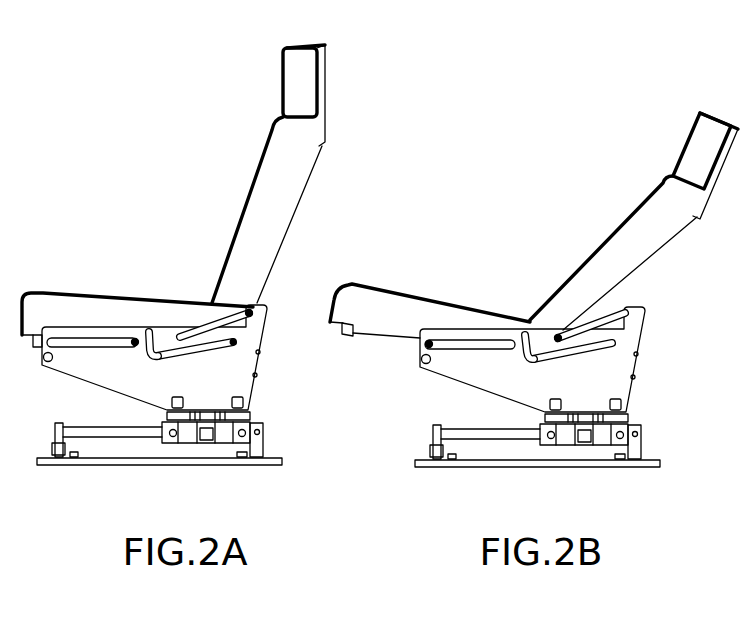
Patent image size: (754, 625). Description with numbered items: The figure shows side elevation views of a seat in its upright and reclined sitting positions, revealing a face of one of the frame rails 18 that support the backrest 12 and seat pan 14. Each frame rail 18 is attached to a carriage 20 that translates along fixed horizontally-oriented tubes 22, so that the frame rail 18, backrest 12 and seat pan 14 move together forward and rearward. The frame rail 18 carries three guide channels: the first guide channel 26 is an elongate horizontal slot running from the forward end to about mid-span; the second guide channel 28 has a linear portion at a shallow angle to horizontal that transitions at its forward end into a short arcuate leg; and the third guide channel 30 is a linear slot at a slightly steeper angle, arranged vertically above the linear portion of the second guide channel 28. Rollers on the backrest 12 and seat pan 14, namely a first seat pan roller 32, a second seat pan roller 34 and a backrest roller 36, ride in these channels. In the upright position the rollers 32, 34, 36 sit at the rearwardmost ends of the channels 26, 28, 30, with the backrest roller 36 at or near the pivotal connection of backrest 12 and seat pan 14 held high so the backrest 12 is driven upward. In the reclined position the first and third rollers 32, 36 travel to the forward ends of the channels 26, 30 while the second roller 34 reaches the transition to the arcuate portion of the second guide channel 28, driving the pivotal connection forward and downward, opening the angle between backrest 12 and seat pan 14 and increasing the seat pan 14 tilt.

In FIG. 2A, the backrest 12 is at (312, 168).
In FIG. 2B, the backrest 12 is at (687, 232).
In FIG. 2A, the seat pan 14 is at (77, 313).
In FIG. 2B, the seat pan 14 is at (373, 335).
In FIG. 2A, the frame rail 18 is at (247, 387).
In FIG. 2B, the frame rail 18 is at (622, 388).
In FIG. 2A, the carriage 20 is at (228, 445).
In FIG. 2B, the carriage 20 is at (608, 447).
In FIG. 2A, the horizontally-oriented tube 22 is at (100, 437).
In FIG. 2B, the horizontally-oriented tube 22 is at (478, 442).
In FIG. 2A, the first guide channel 26 is at (72, 346).
In FIG. 2B, the first guide channel 26 is at (450, 348).
In FIG. 2A, the second guide channel 28 is at (200, 352).
In FIG. 2B, the second guide channel 28 is at (600, 353).
In FIG. 2A, the third guide channel 30 is at (229, 322).
In FIG. 2B, the third guide channel 30 is at (628, 317).
In FIG. 2A, the first seat pan roller 32 is at (132, 324).
In FIG. 2B, the first seat pan roller 32 is at (427, 340).
In FIG. 2A, the second seat pan roller 34 is at (196, 338).
In FIG. 2B, the second seat pan roller 34 is at (528, 333).
In FIG. 2A, the backrest roller 36 is at (243, 307).
In FIG. 2B, the backrest roller 36 is at (558, 333).